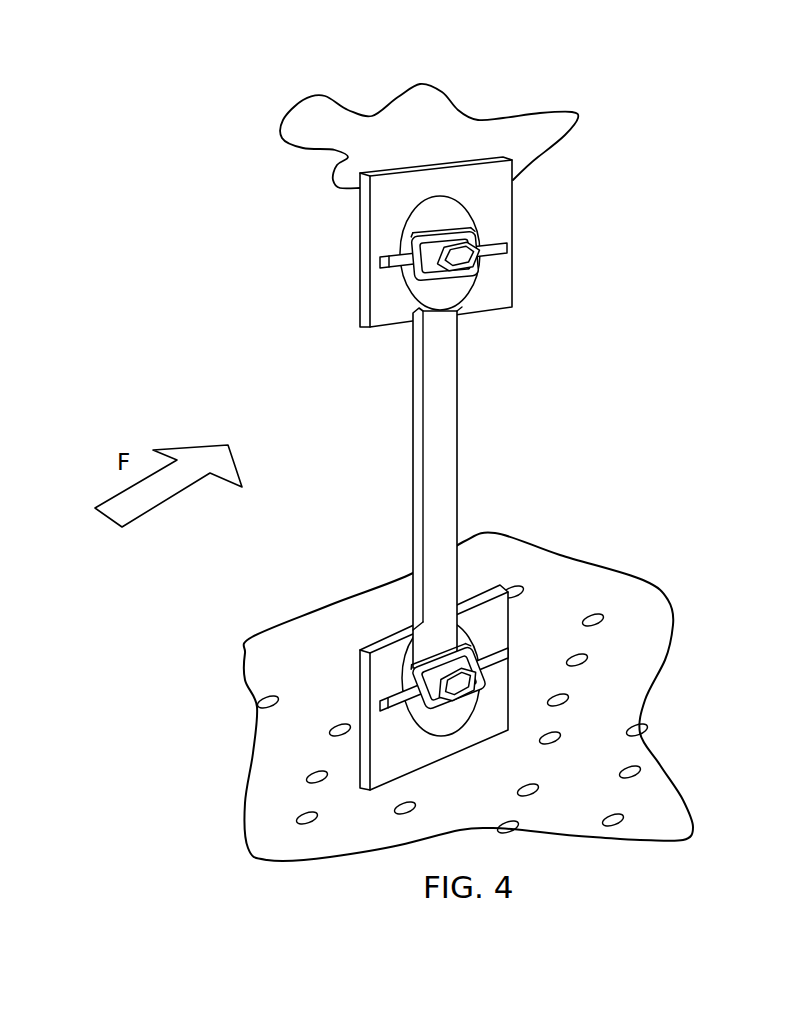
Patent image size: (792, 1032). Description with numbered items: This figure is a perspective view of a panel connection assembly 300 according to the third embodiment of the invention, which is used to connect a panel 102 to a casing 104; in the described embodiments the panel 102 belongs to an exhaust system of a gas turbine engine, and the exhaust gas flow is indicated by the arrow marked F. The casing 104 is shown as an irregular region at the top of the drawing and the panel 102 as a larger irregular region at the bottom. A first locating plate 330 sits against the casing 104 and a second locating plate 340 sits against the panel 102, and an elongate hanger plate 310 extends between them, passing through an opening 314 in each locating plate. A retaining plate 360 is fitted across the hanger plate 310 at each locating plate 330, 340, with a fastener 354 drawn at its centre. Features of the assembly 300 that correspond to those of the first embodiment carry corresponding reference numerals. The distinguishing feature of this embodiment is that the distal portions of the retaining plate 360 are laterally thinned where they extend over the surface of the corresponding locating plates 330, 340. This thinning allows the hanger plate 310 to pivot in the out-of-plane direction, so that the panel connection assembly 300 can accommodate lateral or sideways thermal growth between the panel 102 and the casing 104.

The panel 102 is at (667, 823).
The casing 104 is at (477, 120).
The panel connection assembly 300 is at (348, 467).
The hanger plate 310 is at (458, 445).
The plate opening 314 is at (435, 218).
The first locating plate 330 is at (513, 182).
The second locating plate 340 is at (510, 625).
The locking nut 354 is at (483, 262).
The second retaining plate 360 is at (494, 243).